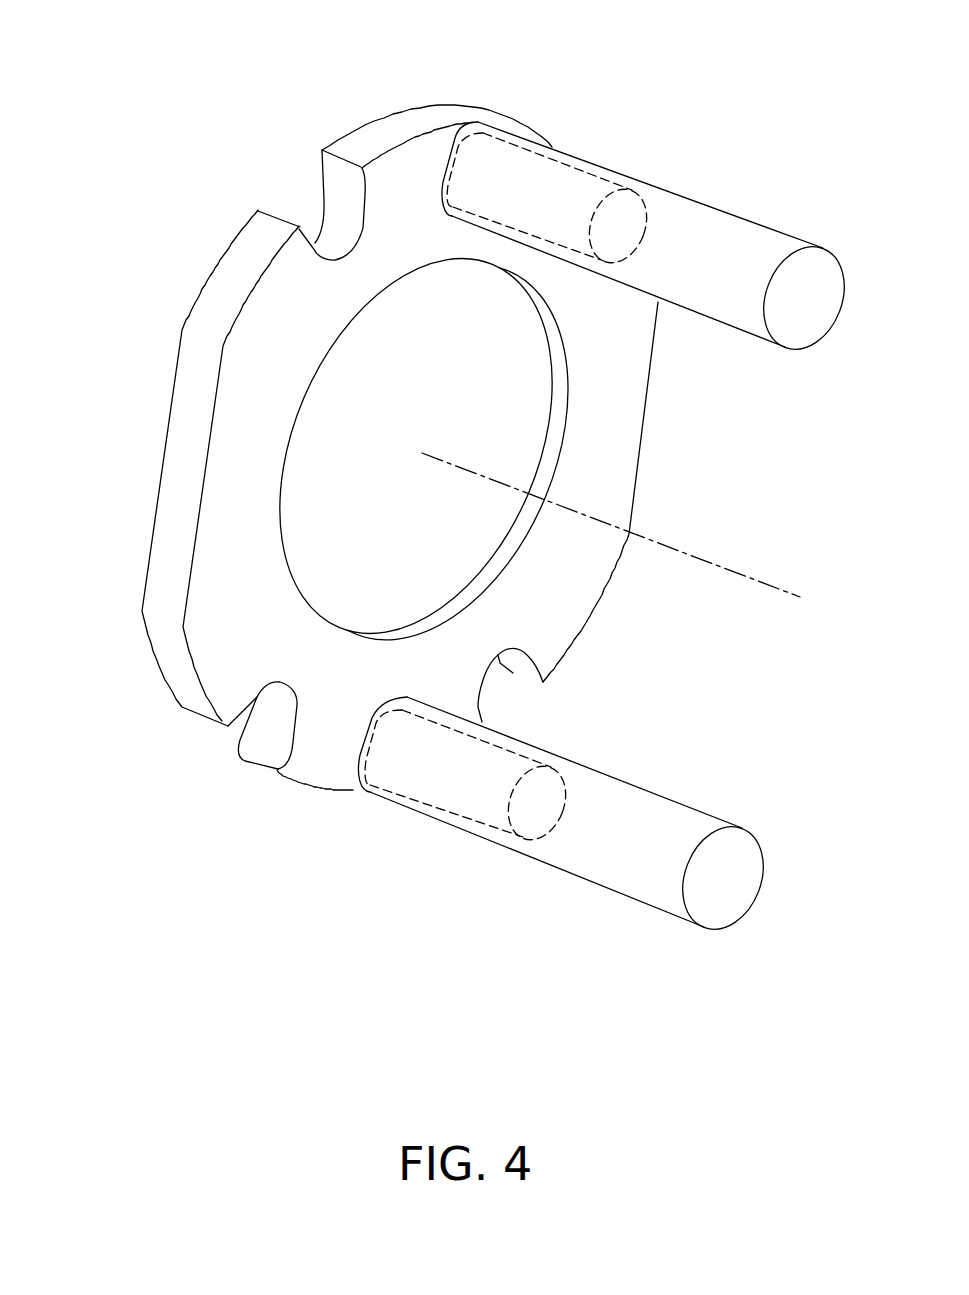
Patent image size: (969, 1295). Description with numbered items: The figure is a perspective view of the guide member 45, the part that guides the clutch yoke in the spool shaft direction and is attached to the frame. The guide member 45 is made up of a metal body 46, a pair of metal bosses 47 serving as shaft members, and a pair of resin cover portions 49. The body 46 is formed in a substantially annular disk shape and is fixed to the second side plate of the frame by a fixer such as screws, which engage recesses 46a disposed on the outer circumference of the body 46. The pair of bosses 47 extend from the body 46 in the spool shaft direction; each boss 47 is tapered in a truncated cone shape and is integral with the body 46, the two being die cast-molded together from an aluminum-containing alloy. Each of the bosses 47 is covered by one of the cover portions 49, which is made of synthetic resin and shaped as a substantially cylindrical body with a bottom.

The guide member 45 is at (456, 528).
The body 46 is at (186, 478).
The recess 46a is at (347, 190).
The boss 47 is at (573, 187).
The cover portion 49 is at (727, 232).